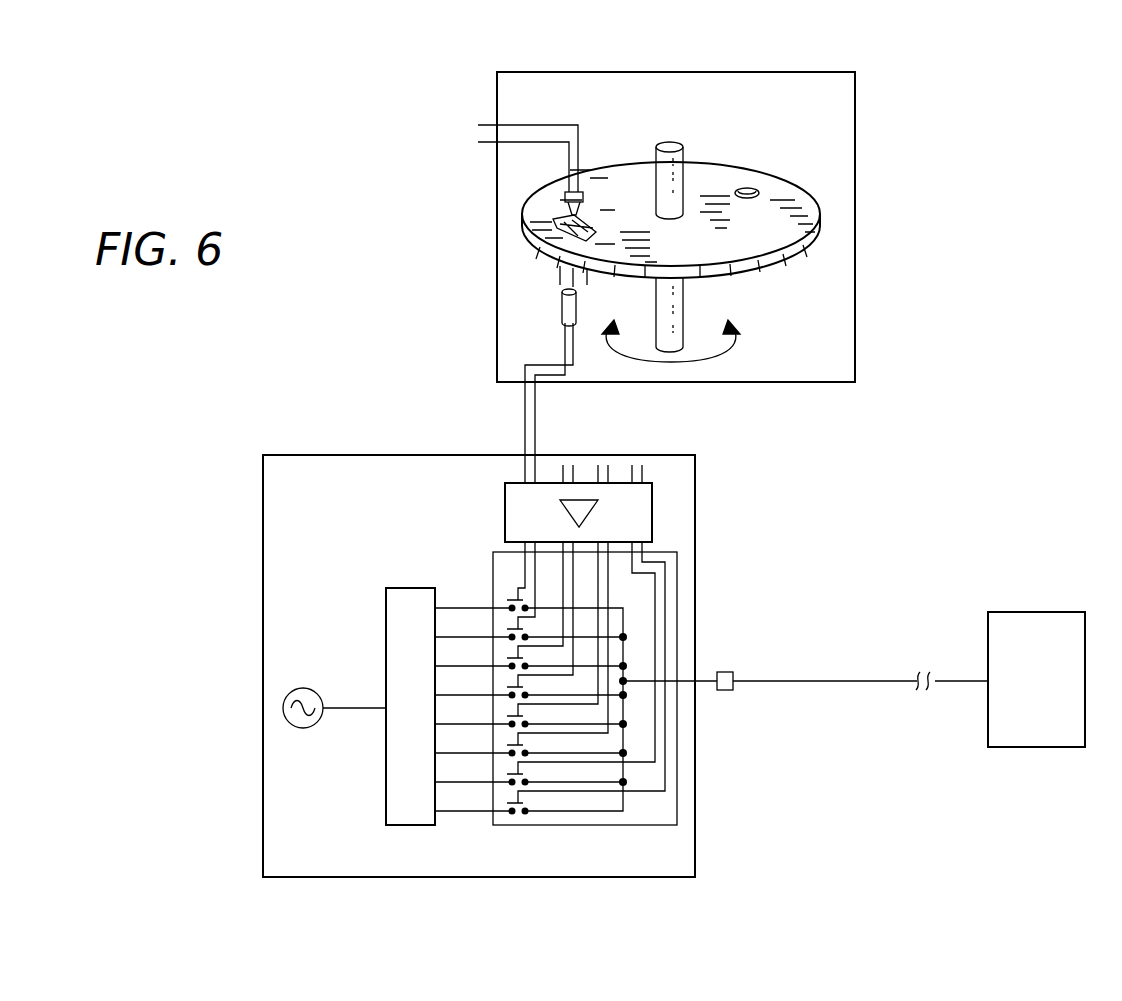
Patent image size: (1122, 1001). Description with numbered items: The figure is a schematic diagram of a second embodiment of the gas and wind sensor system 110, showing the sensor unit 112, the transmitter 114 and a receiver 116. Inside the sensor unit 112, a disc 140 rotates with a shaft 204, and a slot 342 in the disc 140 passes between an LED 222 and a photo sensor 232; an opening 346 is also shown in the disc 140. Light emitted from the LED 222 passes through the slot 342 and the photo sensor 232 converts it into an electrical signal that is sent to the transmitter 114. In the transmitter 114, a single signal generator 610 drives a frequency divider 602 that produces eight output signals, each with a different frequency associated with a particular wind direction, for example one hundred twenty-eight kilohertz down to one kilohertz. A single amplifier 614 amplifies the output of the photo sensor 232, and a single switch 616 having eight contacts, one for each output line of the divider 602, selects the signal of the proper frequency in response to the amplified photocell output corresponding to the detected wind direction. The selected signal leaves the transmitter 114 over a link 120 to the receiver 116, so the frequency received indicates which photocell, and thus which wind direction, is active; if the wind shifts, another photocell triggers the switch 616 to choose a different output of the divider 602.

The system 110 is at (984, 893).
The sensor unit 112 is at (857, 88).
The transmitter 114 is at (572, 878).
The receiver 116 is at (1054, 748).
The communication link 120 is at (767, 686).
The disc 140 is at (785, 262).
The shaft 204 is at (689, 172).
The LED 222 is at (584, 194).
The photo sensor 232 is at (560, 306).
The slot 342 is at (553, 226).
The hole 346 is at (760, 192).
The frequency divider 602 is at (403, 827).
The signal generator 610 is at (325, 722).
The amplifier 614 is at (505, 518).
The switch 616 is at (677, 630).